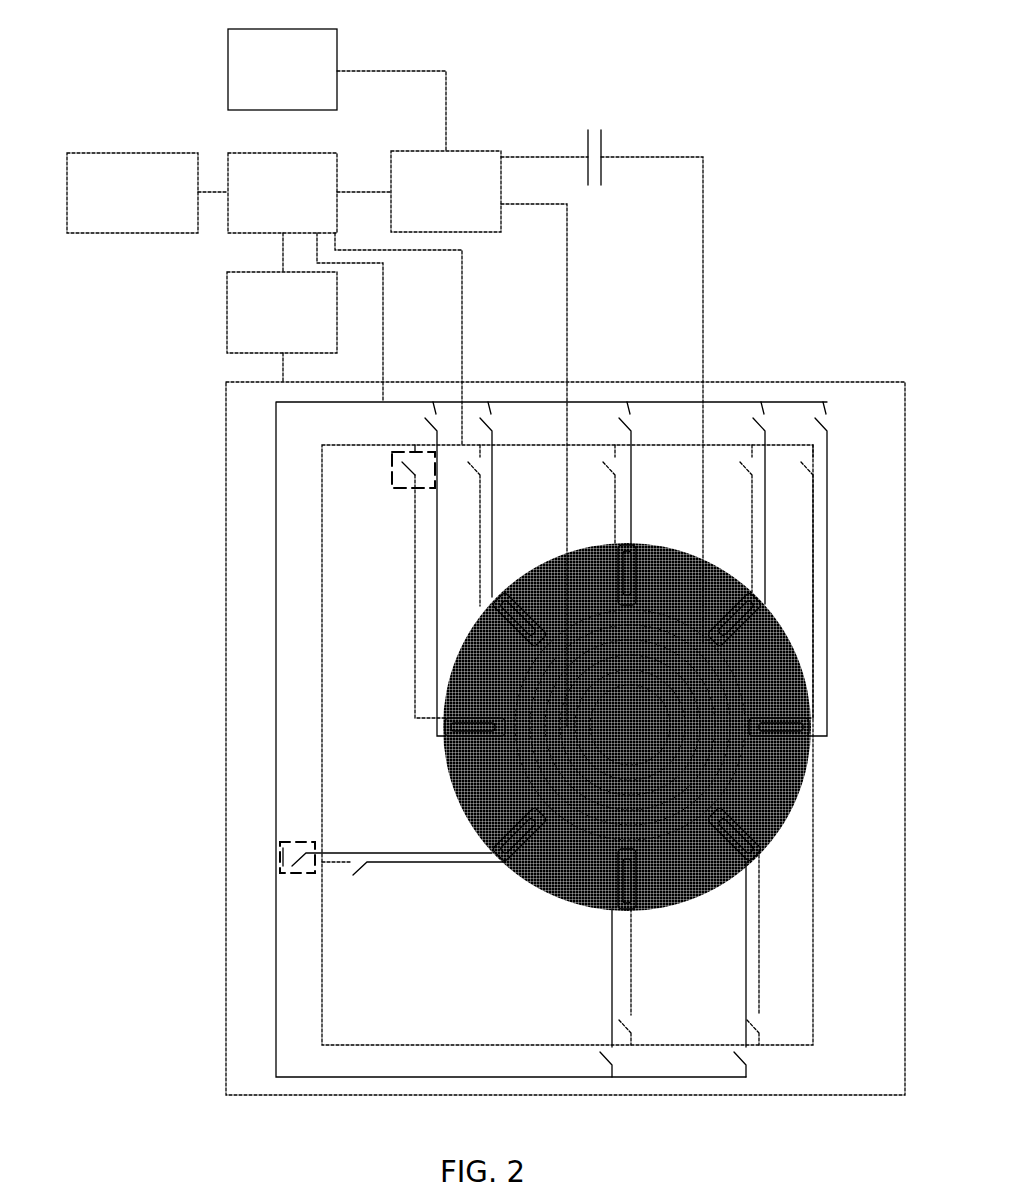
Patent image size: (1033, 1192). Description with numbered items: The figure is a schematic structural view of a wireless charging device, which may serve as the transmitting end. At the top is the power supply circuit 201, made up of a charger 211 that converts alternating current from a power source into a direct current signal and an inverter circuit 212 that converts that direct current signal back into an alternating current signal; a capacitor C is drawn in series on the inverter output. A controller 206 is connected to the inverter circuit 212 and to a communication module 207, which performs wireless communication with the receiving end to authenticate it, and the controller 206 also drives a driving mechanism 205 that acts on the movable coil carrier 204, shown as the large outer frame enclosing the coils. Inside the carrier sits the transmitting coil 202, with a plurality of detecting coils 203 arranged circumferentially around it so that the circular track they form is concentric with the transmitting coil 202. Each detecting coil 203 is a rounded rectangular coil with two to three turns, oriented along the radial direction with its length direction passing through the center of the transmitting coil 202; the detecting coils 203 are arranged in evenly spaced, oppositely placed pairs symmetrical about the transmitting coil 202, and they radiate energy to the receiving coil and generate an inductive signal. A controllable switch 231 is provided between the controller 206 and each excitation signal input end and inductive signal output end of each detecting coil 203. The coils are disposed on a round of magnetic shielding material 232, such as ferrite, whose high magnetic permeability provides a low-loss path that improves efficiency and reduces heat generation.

The power supply circuit 201 is at (418, 15).
The charger 211 is at (338, 54).
The communication module 207 is at (157, 153).
The controller 206 is at (307, 153).
The inverter circuit 212 is at (467, 150).
The capacitor C is at (590, 139).
The driving mechanism 205 is at (227, 322).
The movable coil carrier 204 is at (226, 433).
The controllable switch 231 is at (392, 473).
The magnetic shielding material 232 is at (445, 775).
The transmitting coil 202 is at (590, 830).
The detecting coil 203 is at (504, 850).